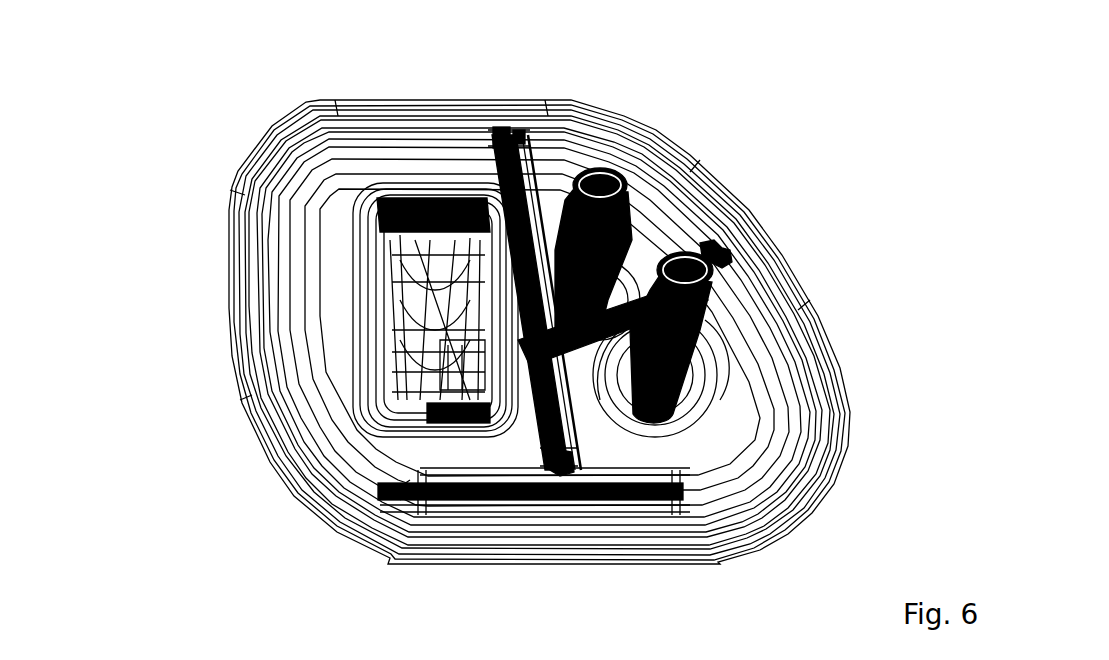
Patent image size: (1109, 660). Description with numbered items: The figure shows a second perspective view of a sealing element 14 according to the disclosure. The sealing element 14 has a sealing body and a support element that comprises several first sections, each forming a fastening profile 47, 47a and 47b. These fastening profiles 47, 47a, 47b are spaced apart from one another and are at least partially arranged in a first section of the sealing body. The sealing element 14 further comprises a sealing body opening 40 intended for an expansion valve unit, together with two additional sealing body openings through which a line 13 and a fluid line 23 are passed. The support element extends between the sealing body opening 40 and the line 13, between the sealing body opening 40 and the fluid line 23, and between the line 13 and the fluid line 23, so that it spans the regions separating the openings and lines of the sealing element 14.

The sealing element 14 is at (177, 95).
The fastening profile 47 is at (492, 138).
The sealing body opening 40 is at (455, 277).
The line 13 is at (626, 180).
The fluid line 23 is at (713, 273).
The fastening profile 47a is at (718, 243).
The fastening profile 47b is at (576, 458).